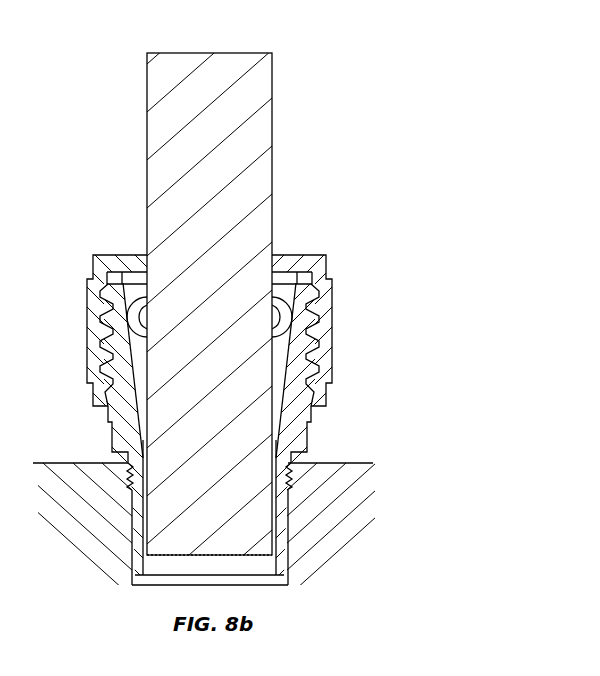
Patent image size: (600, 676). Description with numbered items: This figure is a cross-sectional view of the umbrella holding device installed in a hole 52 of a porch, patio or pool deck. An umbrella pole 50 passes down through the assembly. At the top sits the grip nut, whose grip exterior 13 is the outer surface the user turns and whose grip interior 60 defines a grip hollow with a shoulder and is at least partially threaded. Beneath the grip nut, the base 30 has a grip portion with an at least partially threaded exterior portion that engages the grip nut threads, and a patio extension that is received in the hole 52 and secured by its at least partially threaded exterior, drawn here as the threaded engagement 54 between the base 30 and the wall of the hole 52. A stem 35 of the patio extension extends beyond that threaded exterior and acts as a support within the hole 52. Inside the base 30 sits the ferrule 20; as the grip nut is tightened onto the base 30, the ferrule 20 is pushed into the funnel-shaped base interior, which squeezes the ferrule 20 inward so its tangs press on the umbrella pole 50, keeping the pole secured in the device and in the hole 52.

The umbrella pole 50 is at (255, 92).
The grip interior 60 is at (310, 272).
The grip exterior 13 is at (335, 292).
The ferrule 20 is at (300, 372).
The base 30 is at (292, 443).
The thread 54 is at (288, 483).
The stem 35 is at (280, 527).
The hole 52 is at (265, 567).